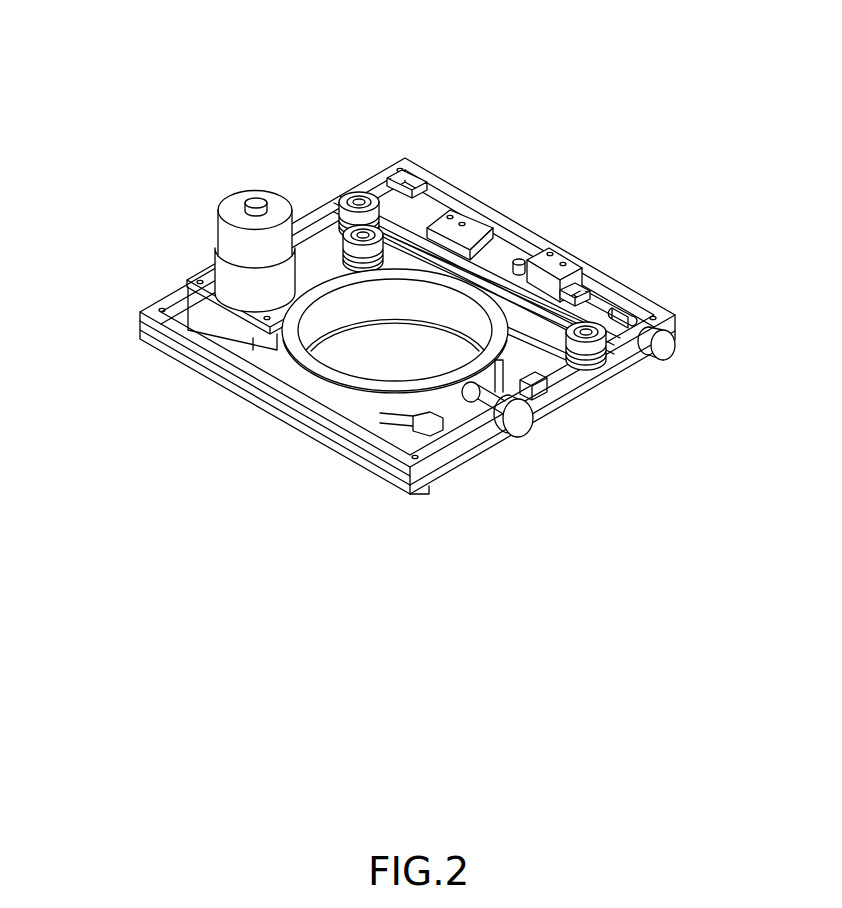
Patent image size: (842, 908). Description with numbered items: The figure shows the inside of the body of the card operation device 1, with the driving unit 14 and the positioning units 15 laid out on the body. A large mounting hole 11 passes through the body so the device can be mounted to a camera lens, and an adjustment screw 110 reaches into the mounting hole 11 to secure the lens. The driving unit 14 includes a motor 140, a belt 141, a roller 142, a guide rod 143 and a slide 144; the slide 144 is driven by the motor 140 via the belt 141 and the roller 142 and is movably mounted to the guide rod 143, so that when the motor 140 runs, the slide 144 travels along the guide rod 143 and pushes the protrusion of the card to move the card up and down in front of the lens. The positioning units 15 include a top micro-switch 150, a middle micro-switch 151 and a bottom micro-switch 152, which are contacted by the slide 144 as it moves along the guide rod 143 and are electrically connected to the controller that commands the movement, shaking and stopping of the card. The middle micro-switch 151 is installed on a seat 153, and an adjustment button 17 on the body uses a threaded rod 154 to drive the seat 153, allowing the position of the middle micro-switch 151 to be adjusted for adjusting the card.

The card operation device 1 is at (125, 286).
The mounting hole 11 is at (310, 368).
The adjustment screw 110 is at (523, 420).
The driving unit 14 is at (422, 233).
The motor 140 is at (221, 240).
The belt 141 is at (372, 212).
The roller 142 is at (655, 410).
The guide rod 143 is at (390, 190).
The slide 144 is at (490, 228).
The positioning units 15 is at (538, 181).
The top micro-switch 150 is at (447, 228).
The middle micro-switch 151 is at (522, 262).
The bottom micro-switch 152 is at (578, 290).
The seat 153 is at (618, 315).
The threaded rod 154 is at (638, 317).
The adjustment button 17 is at (667, 347).